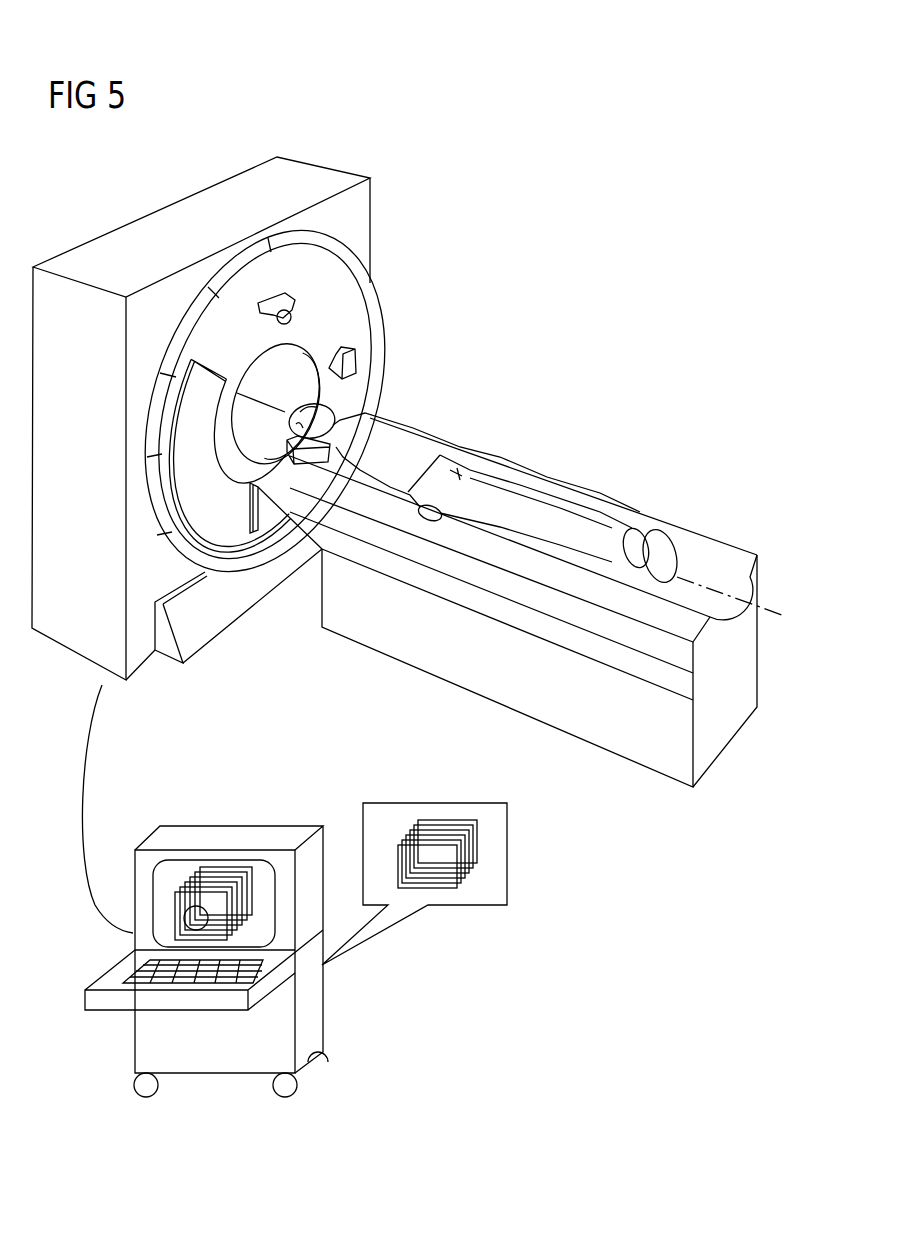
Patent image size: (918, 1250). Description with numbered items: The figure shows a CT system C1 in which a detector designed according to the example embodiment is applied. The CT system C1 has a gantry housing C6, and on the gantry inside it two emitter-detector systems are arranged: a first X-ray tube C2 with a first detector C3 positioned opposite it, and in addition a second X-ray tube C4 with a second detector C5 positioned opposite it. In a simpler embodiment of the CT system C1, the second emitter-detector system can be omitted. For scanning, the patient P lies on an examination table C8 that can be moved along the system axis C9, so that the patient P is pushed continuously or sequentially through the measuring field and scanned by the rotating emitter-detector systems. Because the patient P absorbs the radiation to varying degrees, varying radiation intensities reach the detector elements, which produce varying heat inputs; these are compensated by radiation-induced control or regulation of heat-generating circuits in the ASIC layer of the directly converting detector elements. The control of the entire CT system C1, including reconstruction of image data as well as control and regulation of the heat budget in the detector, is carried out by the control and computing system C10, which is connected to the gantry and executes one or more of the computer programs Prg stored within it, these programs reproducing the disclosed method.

The CT system C1 is at (545, 356).
The first X-ray tube C2 is at (293, 297).
The first detector C3 is at (267, 515).
The second X-ray tube C4 is at (356, 362).
The second detector C5 is at (214, 497).
The housing C6 is at (59, 616).
The examination table C8 is at (650, 745).
The system axis C9 is at (786, 620).
The control and computing system C10 is at (315, 1012).
The patient P is at (407, 445).
The computer programs Prg is at (443, 888).